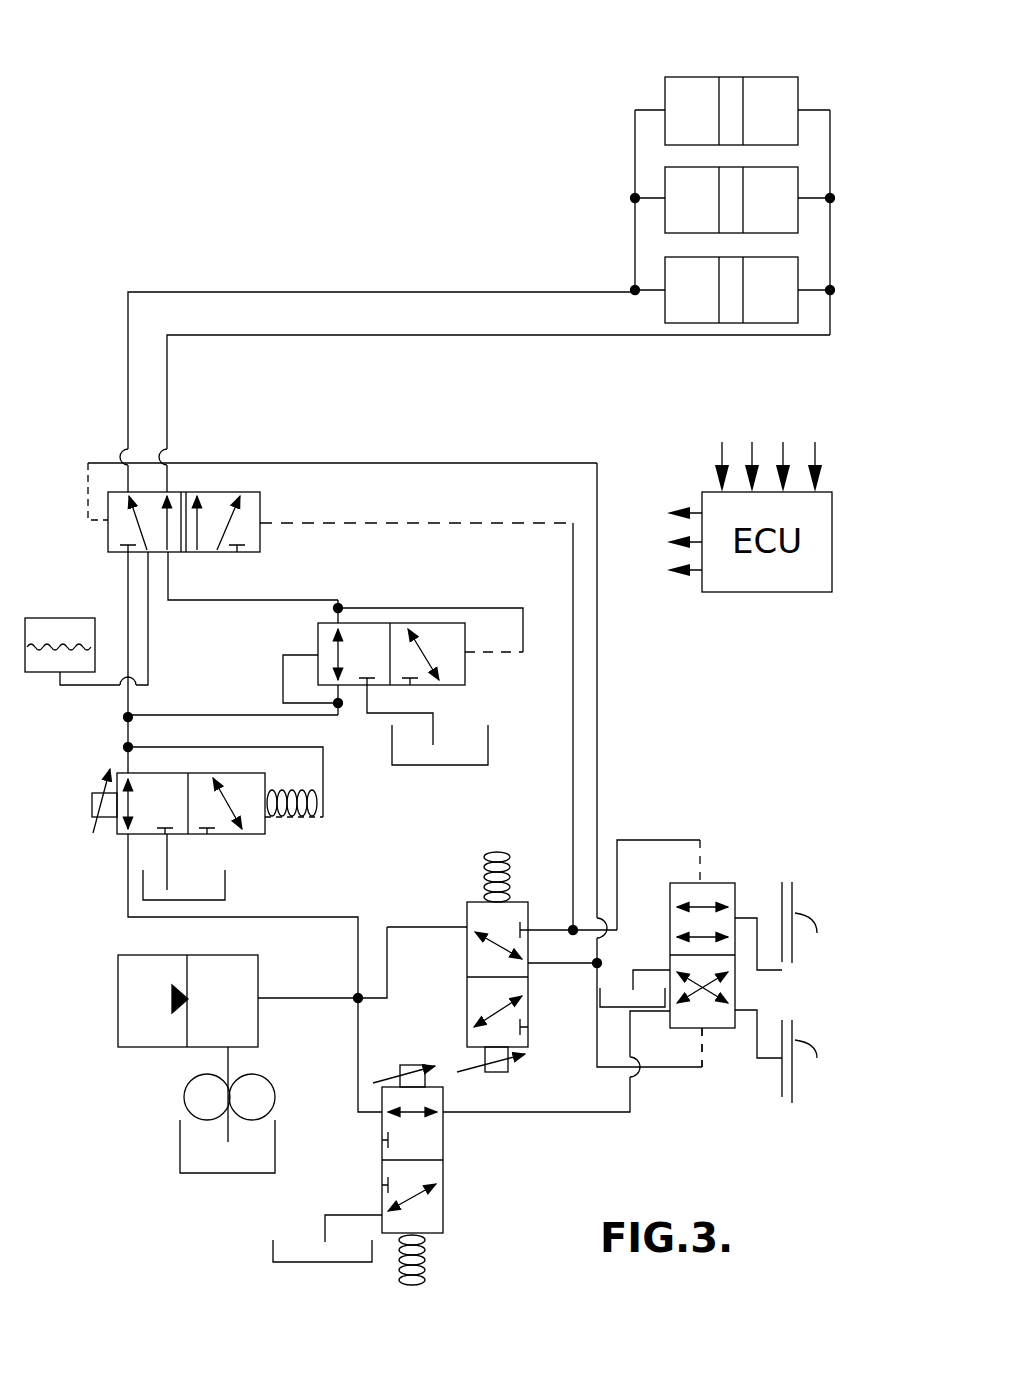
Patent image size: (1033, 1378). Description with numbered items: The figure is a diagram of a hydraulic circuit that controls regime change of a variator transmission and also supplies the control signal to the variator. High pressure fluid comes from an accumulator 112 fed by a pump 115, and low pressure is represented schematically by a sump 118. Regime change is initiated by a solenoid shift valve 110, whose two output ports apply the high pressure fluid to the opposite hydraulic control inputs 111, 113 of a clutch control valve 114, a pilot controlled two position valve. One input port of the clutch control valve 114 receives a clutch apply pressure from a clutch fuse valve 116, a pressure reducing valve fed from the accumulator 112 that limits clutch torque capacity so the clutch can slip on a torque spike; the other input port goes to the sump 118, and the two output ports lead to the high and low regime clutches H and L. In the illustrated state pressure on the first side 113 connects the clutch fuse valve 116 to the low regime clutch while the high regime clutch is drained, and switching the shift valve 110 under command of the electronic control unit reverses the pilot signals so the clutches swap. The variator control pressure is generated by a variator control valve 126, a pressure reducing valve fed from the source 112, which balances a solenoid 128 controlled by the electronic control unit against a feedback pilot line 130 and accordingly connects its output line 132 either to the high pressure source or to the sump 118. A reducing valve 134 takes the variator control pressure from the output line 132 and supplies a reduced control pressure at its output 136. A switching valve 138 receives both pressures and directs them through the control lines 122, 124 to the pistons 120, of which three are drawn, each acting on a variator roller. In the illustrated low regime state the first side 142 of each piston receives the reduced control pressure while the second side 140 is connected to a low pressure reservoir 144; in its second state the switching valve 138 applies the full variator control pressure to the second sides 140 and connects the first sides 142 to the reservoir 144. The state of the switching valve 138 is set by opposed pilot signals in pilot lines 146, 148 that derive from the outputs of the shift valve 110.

The solenoid shift valve 110 is at (467, 908).
The hydraulic control input 111 is at (700, 868).
The accumulator 112 is at (118, 1030).
The hydraulic control input 113 is at (703, 1045).
The clutch control valve 114 is at (736, 920).
The pump 115 is at (268, 1077).
The clutch fuse valve 116 is at (444, 1203).
The sump 118 is at (422, 766).
The pistons 120 is at (737, 77).
The control line 122 is at (455, 290).
The control line 124 is at (358, 335).
The variator control valve 126 is at (268, 836).
The solenoid 128 is at (92, 805).
The pilot line 130 is at (326, 768).
The output line 132 is at (125, 750).
The reducing valve 134 is at (470, 655).
The output 136 is at (190, 600).
The switching valve 138 is at (262, 537).
The second side 140 is at (690, 77).
The first side 142 is at (782, 77).
The reservoir 144 is at (50, 618).
The pilot line 146 is at (574, 700).
The pilot line 148 is at (598, 763).